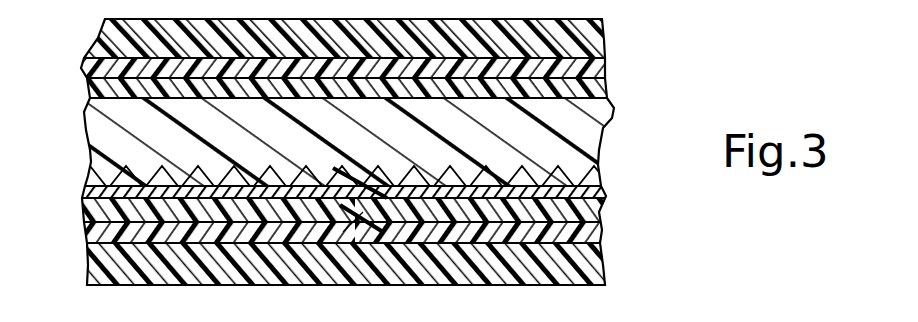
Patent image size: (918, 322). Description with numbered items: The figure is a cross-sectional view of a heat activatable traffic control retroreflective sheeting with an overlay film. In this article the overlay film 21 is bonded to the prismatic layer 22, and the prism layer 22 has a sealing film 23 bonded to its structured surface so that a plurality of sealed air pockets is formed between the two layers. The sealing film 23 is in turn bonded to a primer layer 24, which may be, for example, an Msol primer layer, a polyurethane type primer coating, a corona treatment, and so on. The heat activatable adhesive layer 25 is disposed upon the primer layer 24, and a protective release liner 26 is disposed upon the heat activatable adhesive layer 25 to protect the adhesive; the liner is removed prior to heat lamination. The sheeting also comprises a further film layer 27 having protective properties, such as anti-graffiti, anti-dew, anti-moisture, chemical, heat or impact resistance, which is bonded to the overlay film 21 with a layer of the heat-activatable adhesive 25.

The overlay film 21 is at (607, 88).
The prismatic layer 22 is at (583, 138).
The sealing film 23 is at (607, 193).
The primer layer 24 is at (82, 214).
The heat activatable adhesive layer 25 is at (82, 69).
The protective release liner 26 is at (88, 265).
The further film layer 27 is at (602, 32).